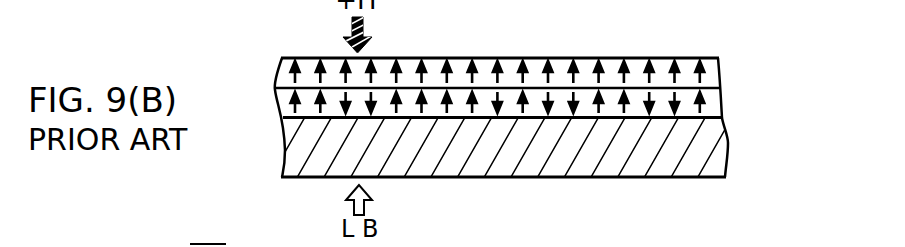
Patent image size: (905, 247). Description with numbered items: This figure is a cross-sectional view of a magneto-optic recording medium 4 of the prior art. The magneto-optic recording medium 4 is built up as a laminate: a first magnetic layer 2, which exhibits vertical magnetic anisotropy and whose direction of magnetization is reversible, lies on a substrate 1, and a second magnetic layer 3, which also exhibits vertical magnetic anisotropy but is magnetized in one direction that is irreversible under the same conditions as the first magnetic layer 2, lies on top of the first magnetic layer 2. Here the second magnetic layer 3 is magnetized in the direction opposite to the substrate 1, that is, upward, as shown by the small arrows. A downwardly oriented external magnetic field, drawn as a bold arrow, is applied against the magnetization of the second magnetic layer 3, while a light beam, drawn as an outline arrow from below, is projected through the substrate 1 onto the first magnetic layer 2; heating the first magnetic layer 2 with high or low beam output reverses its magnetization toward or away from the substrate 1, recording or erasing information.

The substrate 1 is at (723, 153).
The first magnetic layer 2 is at (719, 100).
The second magnetic layer 3 is at (718, 68).
The magneto-optic recording medium 4 is at (550, 124).